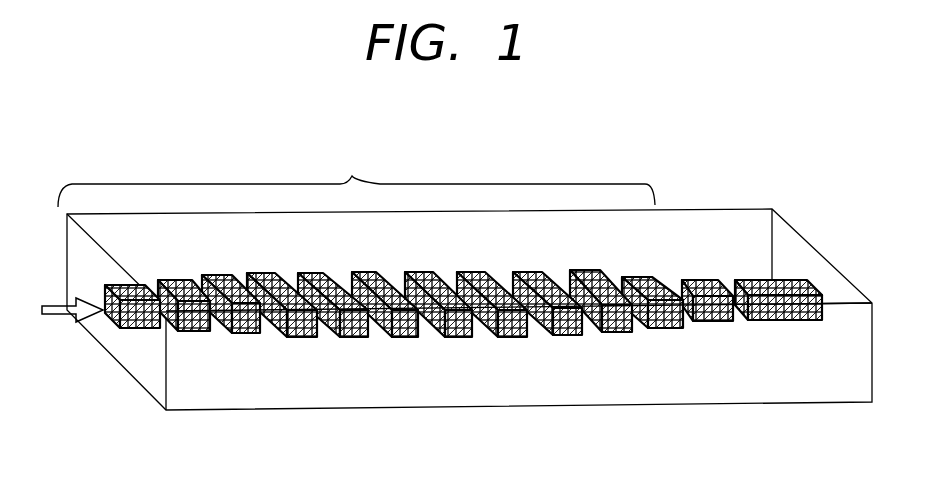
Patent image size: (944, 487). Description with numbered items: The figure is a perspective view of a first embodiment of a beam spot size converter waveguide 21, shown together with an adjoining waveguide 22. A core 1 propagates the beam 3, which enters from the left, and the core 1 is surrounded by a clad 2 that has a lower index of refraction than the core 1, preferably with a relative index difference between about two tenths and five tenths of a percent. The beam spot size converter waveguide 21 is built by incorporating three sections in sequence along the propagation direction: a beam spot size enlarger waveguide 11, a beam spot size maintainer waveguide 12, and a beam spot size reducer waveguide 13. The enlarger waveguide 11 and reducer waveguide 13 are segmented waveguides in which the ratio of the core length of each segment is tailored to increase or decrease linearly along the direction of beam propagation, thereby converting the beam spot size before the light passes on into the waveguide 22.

The core 1 is at (300, 336).
The clad 2 is at (568, 372).
The beam 3 is at (56, 316).
The beam spot size enlarger waveguide 11 is at (284, 262).
The beam spot size maintainer waveguide 12 is at (500, 262).
The beam spot size reducer waveguide 13 is at (500, 258).
The beam spot size converter waveguide 21 is at (356, 178).
The waveguide 22 is at (707, 262).